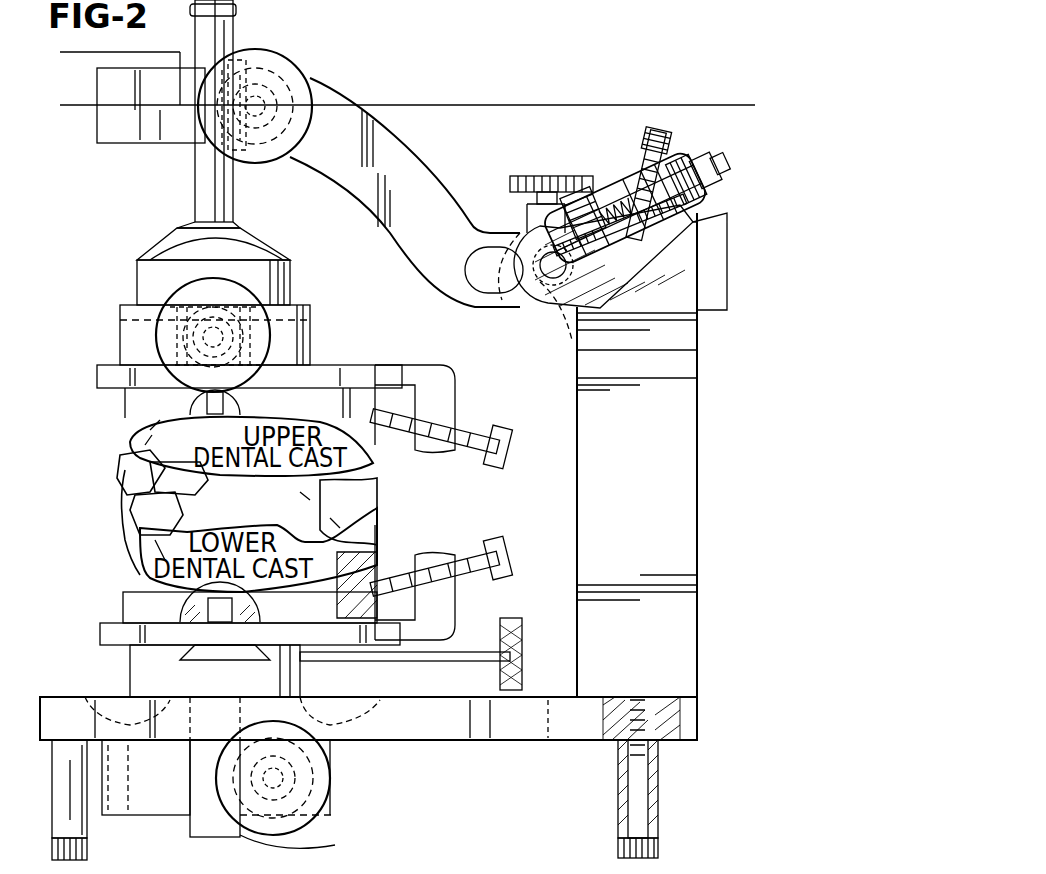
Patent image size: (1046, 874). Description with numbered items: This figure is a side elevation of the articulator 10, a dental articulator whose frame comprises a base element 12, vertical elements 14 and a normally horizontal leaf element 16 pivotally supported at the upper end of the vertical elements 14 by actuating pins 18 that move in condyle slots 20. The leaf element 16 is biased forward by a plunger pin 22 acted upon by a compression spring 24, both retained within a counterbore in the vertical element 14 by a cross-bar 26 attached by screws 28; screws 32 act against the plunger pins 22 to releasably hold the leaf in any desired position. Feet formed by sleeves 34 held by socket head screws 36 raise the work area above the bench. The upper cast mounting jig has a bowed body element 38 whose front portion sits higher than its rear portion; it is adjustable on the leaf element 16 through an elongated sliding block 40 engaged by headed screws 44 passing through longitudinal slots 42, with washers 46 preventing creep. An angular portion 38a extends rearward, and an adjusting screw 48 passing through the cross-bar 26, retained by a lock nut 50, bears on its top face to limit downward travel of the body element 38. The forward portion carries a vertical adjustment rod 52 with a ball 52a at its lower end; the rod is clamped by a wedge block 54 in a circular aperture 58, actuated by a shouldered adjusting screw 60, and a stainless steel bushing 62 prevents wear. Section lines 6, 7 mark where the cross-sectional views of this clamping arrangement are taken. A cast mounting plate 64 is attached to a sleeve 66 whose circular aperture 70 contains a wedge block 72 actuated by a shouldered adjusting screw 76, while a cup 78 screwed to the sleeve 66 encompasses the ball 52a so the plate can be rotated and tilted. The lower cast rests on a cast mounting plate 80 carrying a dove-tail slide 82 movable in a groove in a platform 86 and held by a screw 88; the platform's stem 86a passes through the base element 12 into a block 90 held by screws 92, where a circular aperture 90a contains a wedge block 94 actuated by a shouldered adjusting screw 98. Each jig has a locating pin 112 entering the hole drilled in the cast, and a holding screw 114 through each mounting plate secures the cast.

The articulator 10 is at (430, 70).
The base element 12 is at (428, 740).
The vertical elements 14 is at (690, 505).
The leaf element 16 is at (493, 289).
The actuating pins 18 is at (537, 313).
The condyle slots 20 is at (605, 277).
The plunger pin 22 is at (582, 225).
The compression spring 24 is at (605, 195).
The cross-bar 26 is at (712, 210).
The screws 28 is at (705, 188).
The screws 32 is at (575, 200).
The sleeves 34 is at (58, 780).
The socket head screws 36 is at (52, 852).
The body element 38 is at (432, 165).
The angular portion 38a is at (729, 248).
The sliding block 40 is at (578, 330).
The longitudinal slots 42 is at (520, 232).
The headed screw 44 is at (515, 176).
The washers 46 is at (545, 225).
The adjusting screw 48 is at (662, 134).
The lock nut 50 is at (692, 168).
The vertical adjustment rod 52 is at (200, 165).
The ball 52a is at (192, 228).
The wedge block 54 is at (275, 75).
The circular aperture 58 is at (250, 75).
The shouldered adjusting screw 60 is at (300, 87).
The stainless steel bushing 62 is at (190, 112).
The cast mounting plate 64 is at (108, 388).
The sleeve 66 is at (120, 341).
The circular aperture 70 is at (125, 325).
The wedge block 72 is at (270, 338).
The shouldered adjusting screw 76 is at (262, 292).
The cup 78 is at (150, 258).
The cast mounting plate 80 is at (100, 632).
The dove-tail slide 82 is at (185, 652).
The platform 86 is at (305, 680).
The stem 86a is at (310, 848).
The screw 88 is at (455, 650).
The block 90 is at (172, 805).
The circular aperture 90a is at (210, 820).
The screws 92 is at (85, 700).
The wedge block 94 is at (330, 822).
The shouldered adjusting screw 98 is at (330, 777).
The mounting or locating pin 112 is at (205, 410).
The holding screw 114 is at (500, 530).
The section line 6 is at (552, 172).
The section line 7 is at (68, 45).